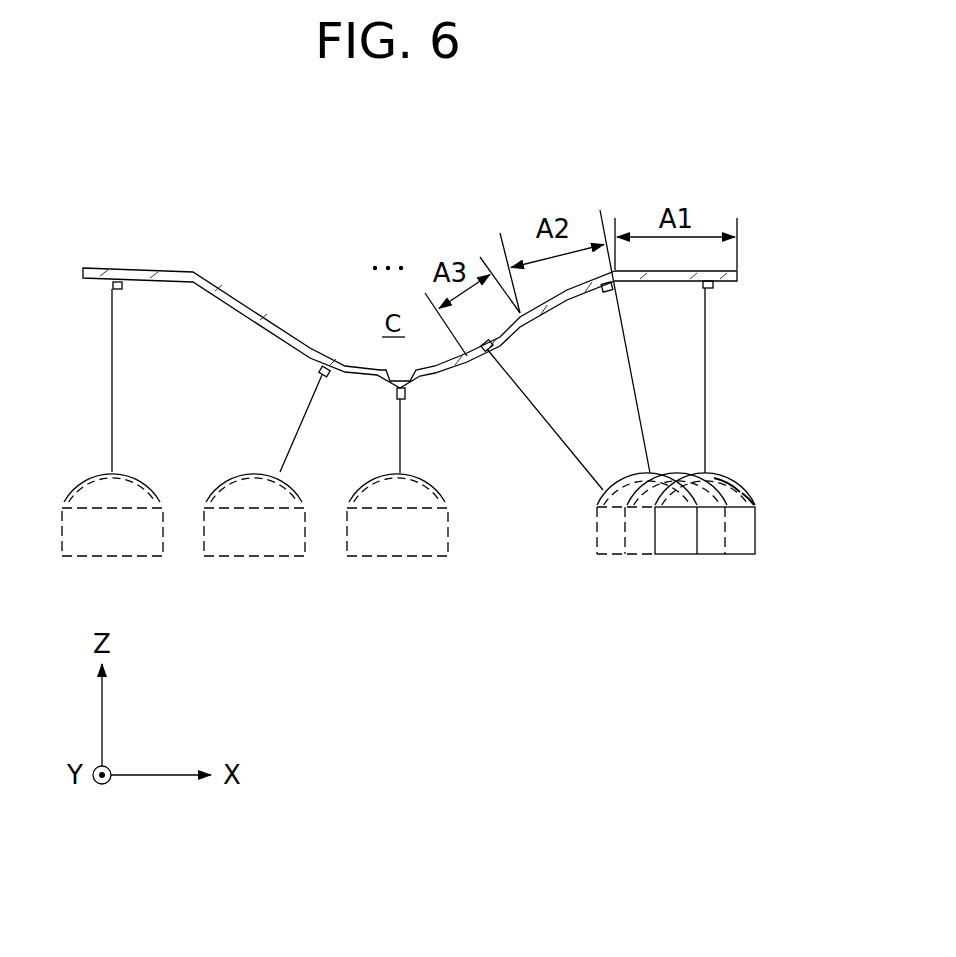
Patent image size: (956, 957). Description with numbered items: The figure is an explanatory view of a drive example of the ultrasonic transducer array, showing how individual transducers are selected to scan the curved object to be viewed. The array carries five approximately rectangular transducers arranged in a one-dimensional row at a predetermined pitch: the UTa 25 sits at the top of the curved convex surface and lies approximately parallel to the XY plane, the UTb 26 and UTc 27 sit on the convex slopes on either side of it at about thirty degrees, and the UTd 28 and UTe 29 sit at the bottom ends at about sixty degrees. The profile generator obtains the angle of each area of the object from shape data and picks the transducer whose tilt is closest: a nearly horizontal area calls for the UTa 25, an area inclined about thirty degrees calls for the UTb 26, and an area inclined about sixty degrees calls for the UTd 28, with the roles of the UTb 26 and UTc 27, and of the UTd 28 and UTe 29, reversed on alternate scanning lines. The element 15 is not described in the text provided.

The light source module housing 15 is at (750, 537).
The UTa 25 is at (712, 468).
The UTb 26 is at (688, 472).
The UTc 27 is at (728, 474).
The UTd 28 is at (630, 478).
The UTe 29 is at (752, 488).